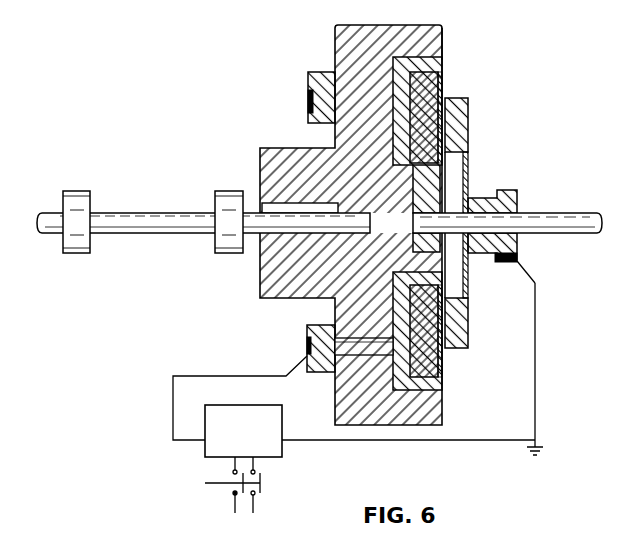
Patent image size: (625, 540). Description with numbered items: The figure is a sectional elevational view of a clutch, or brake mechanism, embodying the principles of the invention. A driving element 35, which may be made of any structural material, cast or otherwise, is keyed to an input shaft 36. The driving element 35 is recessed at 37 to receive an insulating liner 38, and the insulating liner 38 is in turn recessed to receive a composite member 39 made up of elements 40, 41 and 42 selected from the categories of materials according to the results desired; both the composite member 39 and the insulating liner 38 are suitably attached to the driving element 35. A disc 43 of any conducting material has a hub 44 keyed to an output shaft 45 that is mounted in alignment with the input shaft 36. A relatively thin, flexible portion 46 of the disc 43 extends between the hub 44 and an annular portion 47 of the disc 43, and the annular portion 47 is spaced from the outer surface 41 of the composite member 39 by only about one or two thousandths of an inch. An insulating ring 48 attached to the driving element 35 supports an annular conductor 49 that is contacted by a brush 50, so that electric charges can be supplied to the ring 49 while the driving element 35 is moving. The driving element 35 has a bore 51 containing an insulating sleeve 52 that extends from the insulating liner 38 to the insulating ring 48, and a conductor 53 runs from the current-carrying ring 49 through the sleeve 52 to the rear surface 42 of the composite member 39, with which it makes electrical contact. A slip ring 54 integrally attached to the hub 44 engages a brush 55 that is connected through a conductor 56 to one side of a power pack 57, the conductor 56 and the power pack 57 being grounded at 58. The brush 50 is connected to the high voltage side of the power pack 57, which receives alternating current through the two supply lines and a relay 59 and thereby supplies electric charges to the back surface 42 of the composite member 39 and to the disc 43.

The driving element 35 is at (340, 46).
The input shaft 36 is at (177, 212).
The recess 37 is at (443, 30).
The insulating liner 38 is at (437, 60).
The composite member 39 is at (443, 85).
The composite member element 40 is at (437, 354).
The outer surface 41 is at (440, 366).
The rear surface 42 is at (412, 96).
The disc 43 is at (470, 346).
The hub 44 is at (481, 198).
The output shaft 45 is at (575, 214).
The flexible portion 46 is at (469, 160).
The annular portion 47 is at (468, 325).
The insulating ring 48 is at (311, 74).
The annular conductor 49 is at (309, 101).
The brush 50 is at (303, 367).
The bore 51 is at (336, 380).
The insulating sleeve 52 is at (386, 358).
The conductor 53 is at (378, 345).
The slip ring 54 is at (518, 259).
The brush 55 is at (531, 276).
The conductor 56 is at (536, 354).
The power pack 57 is at (266, 430).
The ground 58 is at (538, 447).
The relay 59 is at (262, 489).